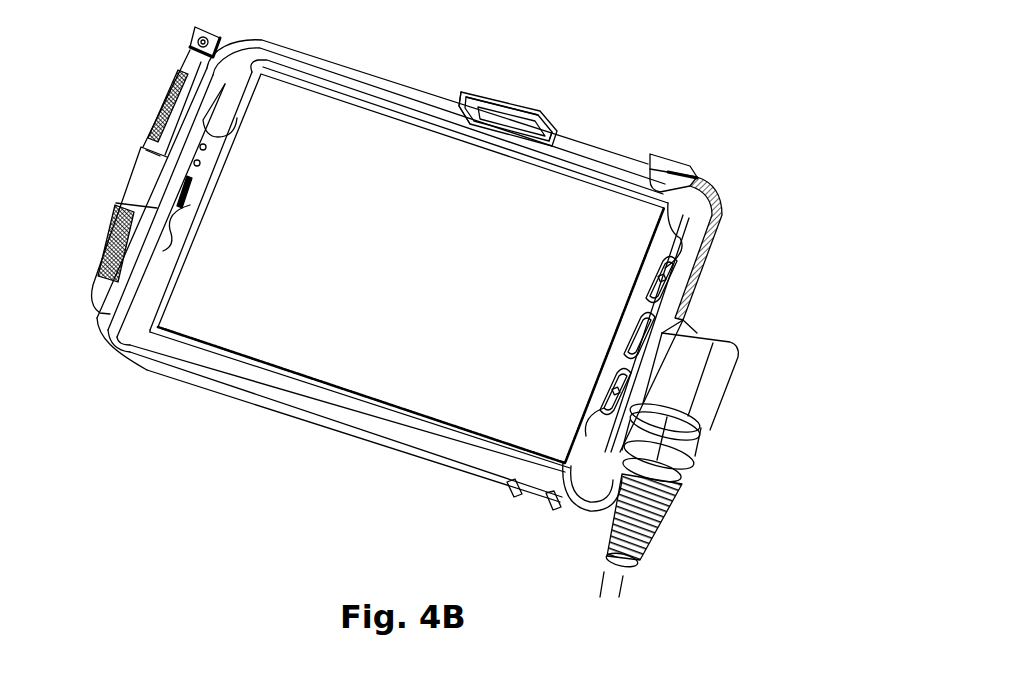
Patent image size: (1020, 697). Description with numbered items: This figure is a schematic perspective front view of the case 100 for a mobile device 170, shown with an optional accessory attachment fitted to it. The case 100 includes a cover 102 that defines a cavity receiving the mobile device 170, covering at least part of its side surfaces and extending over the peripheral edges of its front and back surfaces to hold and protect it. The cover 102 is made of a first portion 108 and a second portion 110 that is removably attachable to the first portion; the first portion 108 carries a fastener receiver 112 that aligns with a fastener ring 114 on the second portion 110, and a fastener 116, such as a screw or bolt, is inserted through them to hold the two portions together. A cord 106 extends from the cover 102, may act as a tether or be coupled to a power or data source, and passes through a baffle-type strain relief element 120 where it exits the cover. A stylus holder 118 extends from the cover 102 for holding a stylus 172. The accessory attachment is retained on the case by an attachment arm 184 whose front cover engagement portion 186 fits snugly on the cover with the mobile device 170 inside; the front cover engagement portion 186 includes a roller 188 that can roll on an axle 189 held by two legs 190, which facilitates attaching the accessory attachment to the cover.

The case 100 is at (623, 159).
The cover 102 is at (173, 382).
The cord 106 is at (606, 572).
The first portion 108 is at (385, 452).
The second portion 110 is at (723, 210).
The fastener receiver 112 is at (519, 492).
The fastener ring 114 is at (549, 508).
The fastener 116 is at (562, 510).
The stylus holder 118 is at (130, 180).
The strain relief element 120 is at (660, 517).
The mobile device 170 is at (283, 338).
The stylus 172 is at (180, 67).
The attachment arm 184 is at (505, 86).
The front cover engagement portion 186 is at (490, 93).
The roller 188 is at (504, 126).
The axle 189 is at (556, 136).
The legs 190 is at (462, 100).